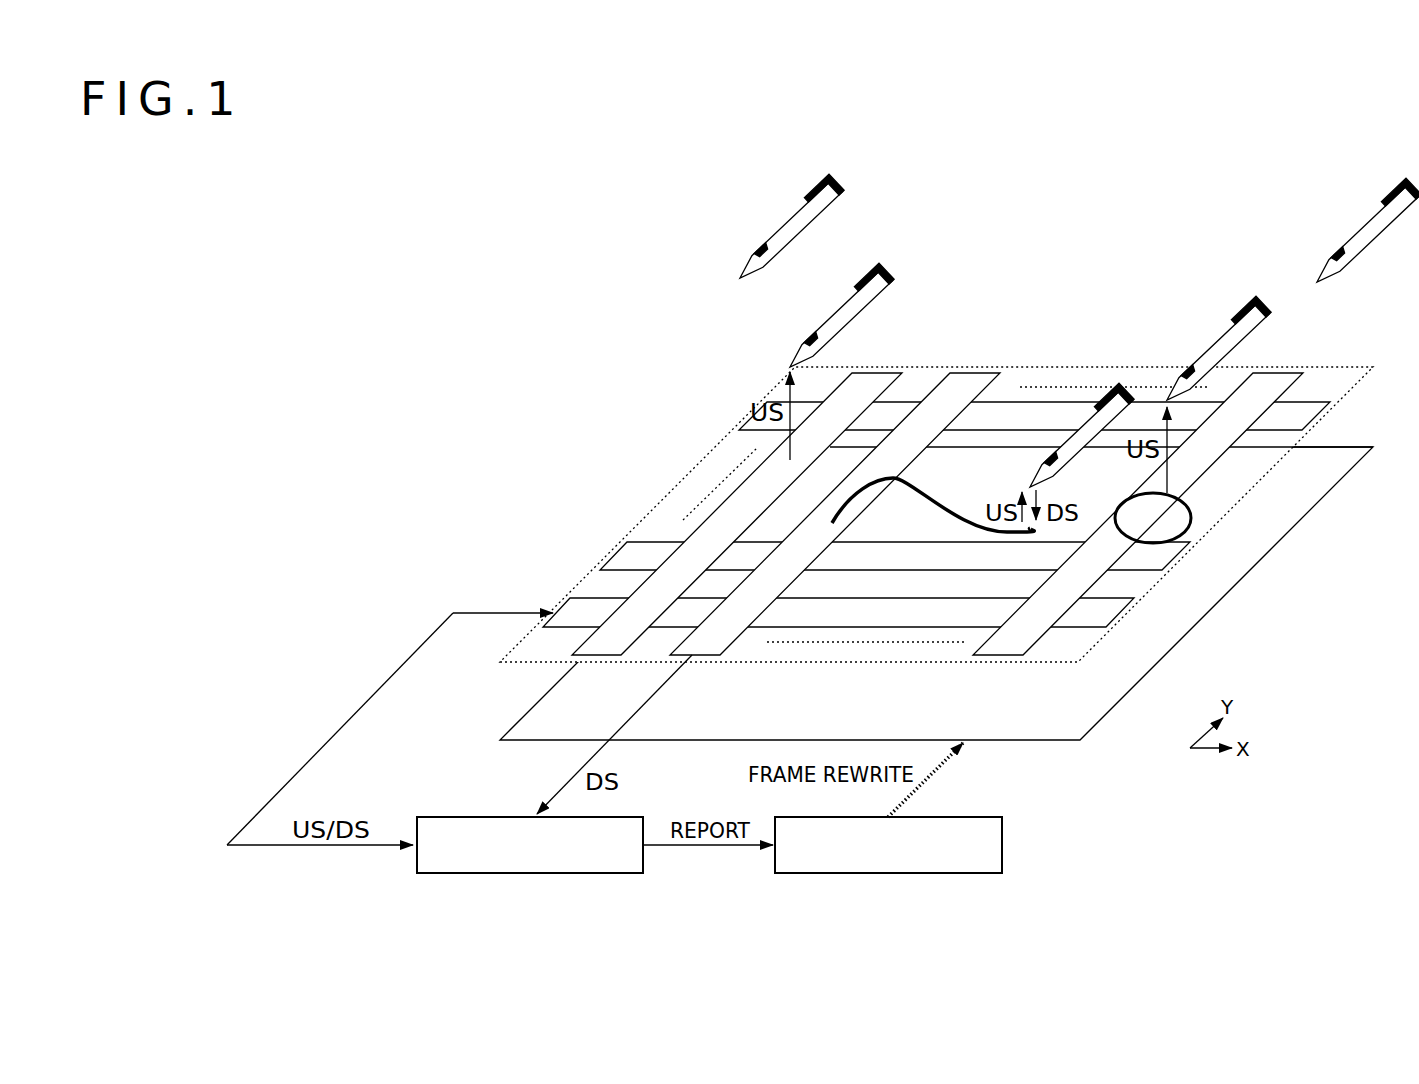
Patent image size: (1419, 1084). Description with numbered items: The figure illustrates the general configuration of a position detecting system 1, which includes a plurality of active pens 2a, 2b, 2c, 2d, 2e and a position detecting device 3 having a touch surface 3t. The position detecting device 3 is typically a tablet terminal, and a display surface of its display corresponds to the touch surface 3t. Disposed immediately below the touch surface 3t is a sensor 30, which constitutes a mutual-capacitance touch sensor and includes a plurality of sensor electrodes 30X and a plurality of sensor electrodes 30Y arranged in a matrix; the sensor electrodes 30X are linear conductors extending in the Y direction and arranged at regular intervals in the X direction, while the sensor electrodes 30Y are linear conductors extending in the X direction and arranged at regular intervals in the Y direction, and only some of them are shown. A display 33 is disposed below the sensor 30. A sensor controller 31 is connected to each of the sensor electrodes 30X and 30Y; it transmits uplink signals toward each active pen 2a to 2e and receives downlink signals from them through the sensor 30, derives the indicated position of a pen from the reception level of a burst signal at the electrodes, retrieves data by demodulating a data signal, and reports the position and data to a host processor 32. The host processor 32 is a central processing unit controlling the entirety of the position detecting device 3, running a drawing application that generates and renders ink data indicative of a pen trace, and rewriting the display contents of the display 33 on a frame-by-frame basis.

The position detecting system 1 is at (557, 295).
The active pen 2a is at (822, 183).
The active pen 2b is at (870, 268).
The active pen 2c is at (1115, 392).
The active pen 2d is at (1248, 305).
The active pen 2e is at (1398, 181).
The position detecting device 3 is at (936, 514).
The touch surface 3t is at (1051, 366).
The sensor 30 is at (1322, 373).
The sensor electrodes 30X is at (1001, 658).
The sensor electrodes 30Y is at (1100, 628).
The sensor controller 31 is at (530, 875).
The host processor 32 is at (888, 875).
The display 33 is at (1062, 742).